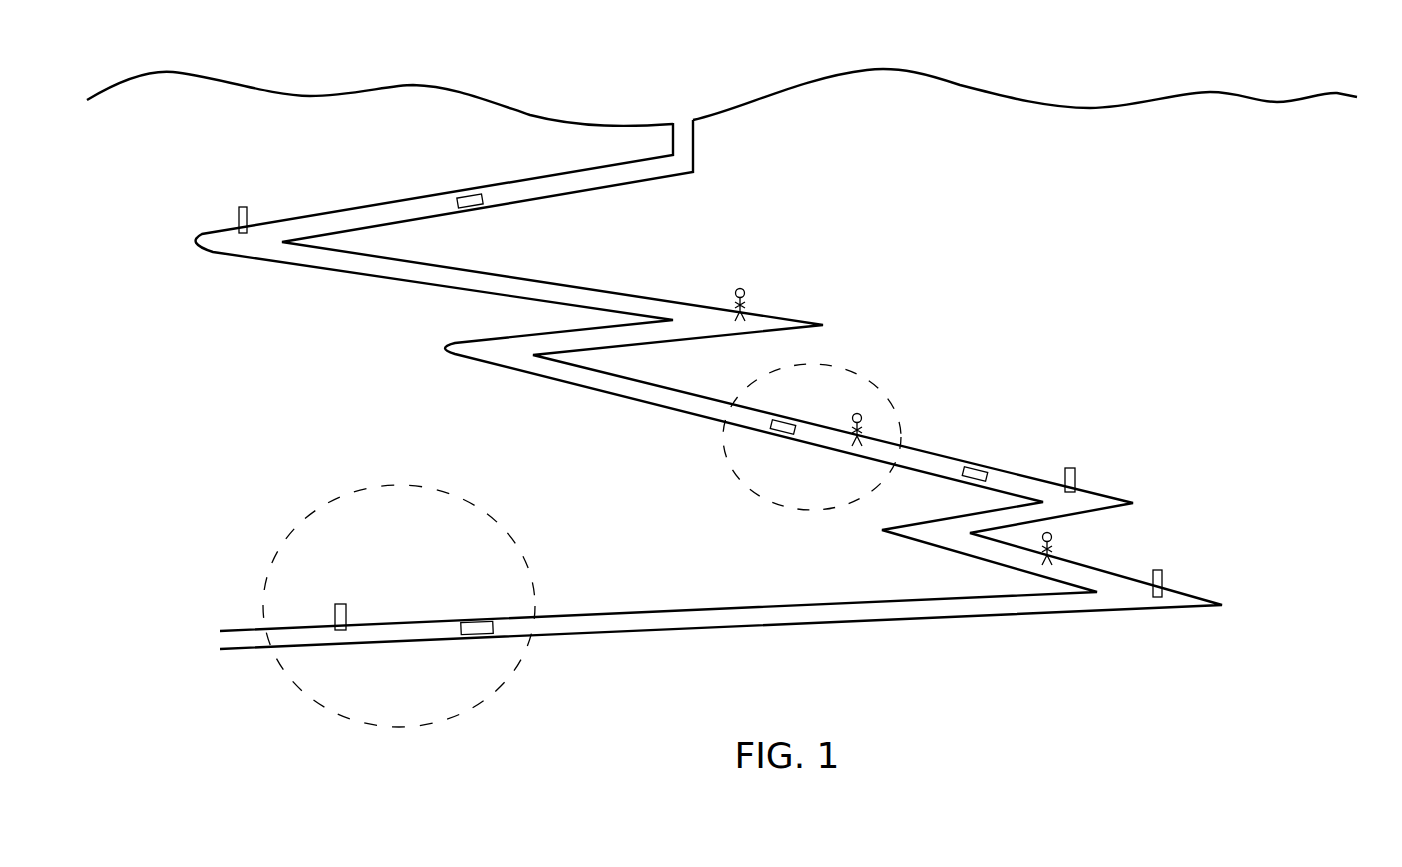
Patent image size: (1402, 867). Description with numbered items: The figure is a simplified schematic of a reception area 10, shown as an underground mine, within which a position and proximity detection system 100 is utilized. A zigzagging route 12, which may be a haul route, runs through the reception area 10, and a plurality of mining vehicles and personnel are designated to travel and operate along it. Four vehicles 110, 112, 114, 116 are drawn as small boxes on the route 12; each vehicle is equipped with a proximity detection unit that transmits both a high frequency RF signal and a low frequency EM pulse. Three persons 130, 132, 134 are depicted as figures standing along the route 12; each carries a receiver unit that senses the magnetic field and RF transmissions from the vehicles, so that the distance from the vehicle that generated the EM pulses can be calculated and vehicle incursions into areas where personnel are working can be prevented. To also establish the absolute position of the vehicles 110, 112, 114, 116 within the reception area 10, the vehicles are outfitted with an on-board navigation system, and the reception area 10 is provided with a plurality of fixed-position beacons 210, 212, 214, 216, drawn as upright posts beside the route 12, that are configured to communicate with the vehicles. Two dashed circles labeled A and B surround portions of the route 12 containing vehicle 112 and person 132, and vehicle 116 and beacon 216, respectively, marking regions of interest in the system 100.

The reception area 10 is at (1027, 58).
The position and proximity detection system 100 is at (720, 423).
The route 12 is at (653, 300).
The vehicle 110 is at (466, 194).
The vehicle 112 is at (781, 433).
The vehicle 114 is at (973, 463).
The vehicle 116 is at (475, 621).
The person 130 is at (739, 287).
The person 132 is at (858, 413).
The person 134 is at (1052, 537).
The fixed-position beacon 210 is at (243, 206).
The fixed-position beacon 212 is at (1069, 466).
The fixed-position beacon 214 is at (1163, 580).
The fixed-position beacon 216 is at (340, 603).
The detail region A is at (864, 376).
The detail region B is at (411, 485).